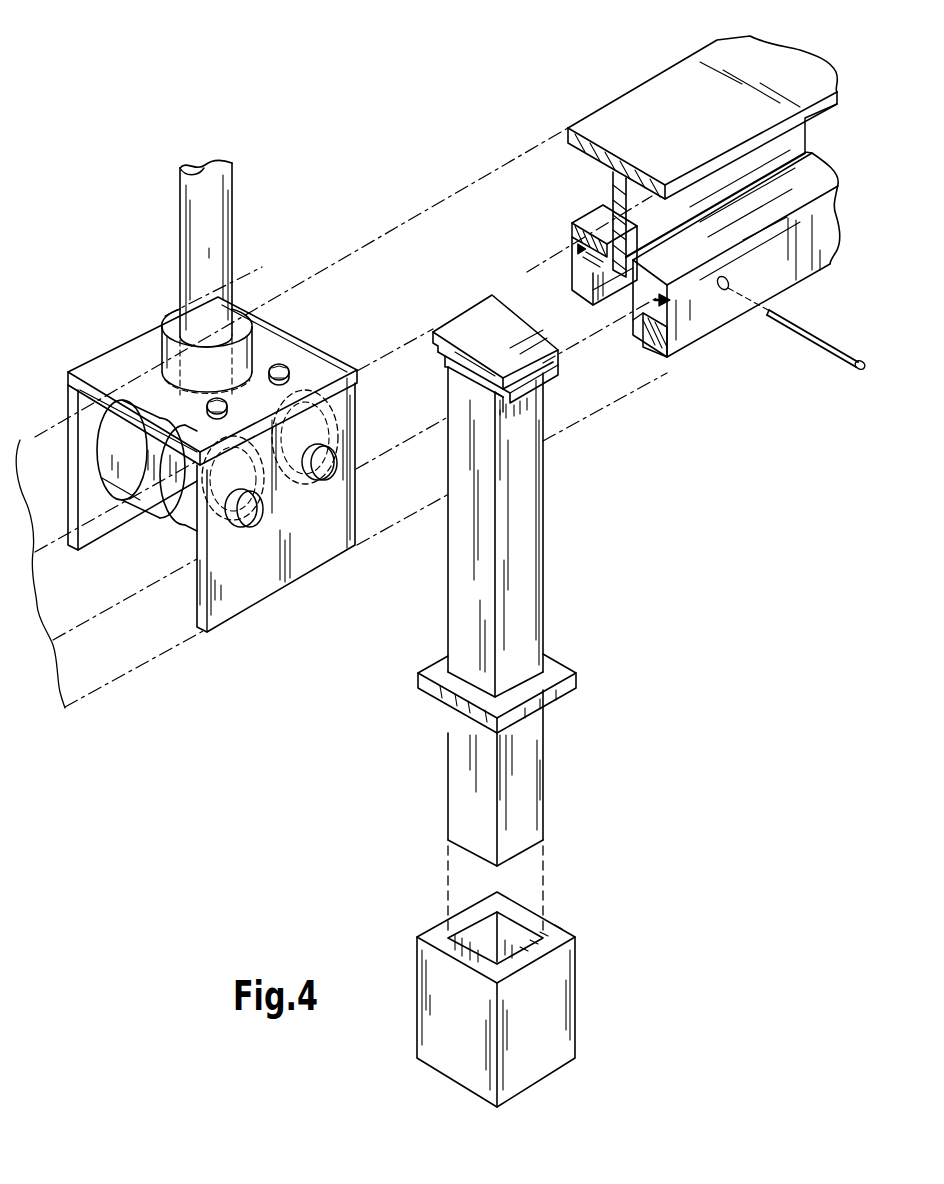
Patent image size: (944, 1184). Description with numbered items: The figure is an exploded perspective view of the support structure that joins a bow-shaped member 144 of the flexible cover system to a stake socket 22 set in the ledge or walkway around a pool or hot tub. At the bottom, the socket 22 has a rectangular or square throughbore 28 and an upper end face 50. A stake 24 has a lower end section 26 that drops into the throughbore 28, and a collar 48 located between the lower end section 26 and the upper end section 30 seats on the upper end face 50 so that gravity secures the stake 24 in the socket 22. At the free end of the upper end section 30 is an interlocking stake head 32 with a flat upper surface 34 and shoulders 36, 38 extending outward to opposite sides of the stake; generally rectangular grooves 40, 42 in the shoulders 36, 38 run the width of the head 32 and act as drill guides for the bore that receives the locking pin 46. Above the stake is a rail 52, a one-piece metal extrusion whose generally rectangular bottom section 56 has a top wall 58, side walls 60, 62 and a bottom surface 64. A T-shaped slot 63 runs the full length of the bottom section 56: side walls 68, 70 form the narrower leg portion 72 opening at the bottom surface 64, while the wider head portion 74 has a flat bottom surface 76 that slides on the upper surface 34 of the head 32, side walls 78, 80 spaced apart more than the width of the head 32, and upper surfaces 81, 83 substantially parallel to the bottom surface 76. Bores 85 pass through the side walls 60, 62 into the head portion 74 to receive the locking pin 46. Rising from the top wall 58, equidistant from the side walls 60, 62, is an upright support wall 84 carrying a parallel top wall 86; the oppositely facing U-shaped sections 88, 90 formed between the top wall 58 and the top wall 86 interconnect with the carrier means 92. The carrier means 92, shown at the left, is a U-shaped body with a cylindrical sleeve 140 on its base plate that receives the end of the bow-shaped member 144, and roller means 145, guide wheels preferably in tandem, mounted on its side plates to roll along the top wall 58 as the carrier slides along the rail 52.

The stake socket 22 is at (527, 1012).
The stake 24 is at (582, 666).
The lower end section 26 is at (463, 798).
The throughbore 28 is at (473, 930).
The upper end section 30 is at (525, 525).
The interlocking stake head 32 is at (488, 372).
The flat upper surface 34 is at (503, 330).
The shoulder 36 is at (548, 364).
The shoulder 38 is at (437, 360).
The groove 40 is at (503, 393).
The groove 42 is at (432, 331).
The locking pin 46 is at (838, 358).
The collar 48 is at (437, 669).
The upper end face 50 is at (552, 932).
The rail 52 is at (657, 64).
The bottom section 56 is at (708, 322).
The top wall 58 is at (800, 188).
The side wall 60 is at (785, 253).
The side wall 62 is at (568, 240).
The T-shaped slot 63 is at (618, 330).
The bottom surface 64 is at (653, 362).
The side wall 68 is at (703, 380).
The side wall 70 is at (572, 278).
The narrower leg portion 72 is at (612, 322).
The wider head portion 74 is at (660, 318).
The flat bottom surface 76 is at (626, 260).
The side wall 78 is at (716, 281).
The side wall 80 is at (570, 228).
The upper surface 81 is at (643, 337).
The upper surface 83 is at (590, 312).
The upright support wall 84 is at (612, 172).
The bore 85 is at (720, 292).
The top wall 86 is at (600, 132).
The U-shaped section 88 is at (827, 133).
The U-shaped section 90 is at (556, 171).
The carrier means 92 is at (90, 345).
The cylindrical sleeve 140 is at (163, 360).
The bow-shaped member 144 is at (205, 214).
The roller means 145 is at (165, 535).